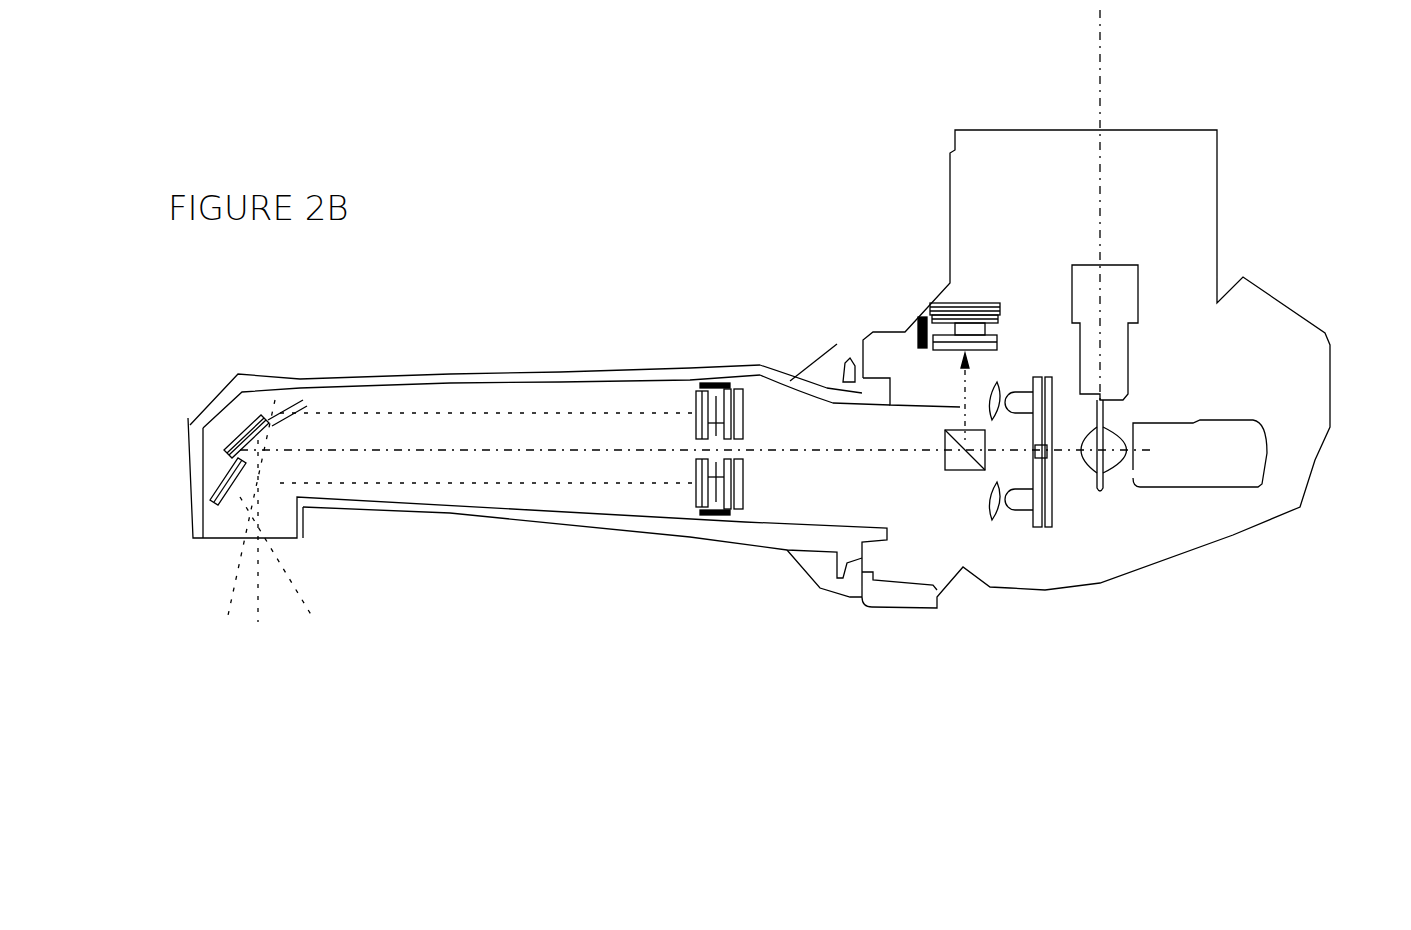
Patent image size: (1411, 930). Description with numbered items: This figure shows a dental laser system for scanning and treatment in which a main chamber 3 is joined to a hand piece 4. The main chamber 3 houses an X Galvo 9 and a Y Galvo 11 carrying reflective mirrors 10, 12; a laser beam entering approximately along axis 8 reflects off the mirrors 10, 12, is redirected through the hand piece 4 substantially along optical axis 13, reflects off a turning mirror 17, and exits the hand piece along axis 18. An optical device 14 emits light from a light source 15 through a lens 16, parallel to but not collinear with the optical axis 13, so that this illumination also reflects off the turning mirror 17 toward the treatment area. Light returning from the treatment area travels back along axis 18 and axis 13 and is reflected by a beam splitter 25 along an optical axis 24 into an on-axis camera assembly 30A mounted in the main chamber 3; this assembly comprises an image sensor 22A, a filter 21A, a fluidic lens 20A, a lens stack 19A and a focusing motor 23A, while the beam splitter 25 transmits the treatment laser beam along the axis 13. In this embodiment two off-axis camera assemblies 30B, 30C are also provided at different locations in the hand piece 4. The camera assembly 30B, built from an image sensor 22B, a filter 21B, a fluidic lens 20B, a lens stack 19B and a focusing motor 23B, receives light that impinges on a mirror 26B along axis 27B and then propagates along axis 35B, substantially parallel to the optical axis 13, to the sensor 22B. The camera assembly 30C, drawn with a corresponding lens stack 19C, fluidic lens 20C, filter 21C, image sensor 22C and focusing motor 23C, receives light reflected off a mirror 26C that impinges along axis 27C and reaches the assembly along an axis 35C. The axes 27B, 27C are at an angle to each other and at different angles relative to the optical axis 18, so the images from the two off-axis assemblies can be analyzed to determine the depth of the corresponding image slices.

The main chamber 3 is at (997, 128).
The hand piece 4 is at (522, 510).
The axis 8 is at (1100, 98).
The X Galvo 9 is at (1117, 280).
The reflective mirror 10 is at (1095, 495).
The Y Galvo 11 is at (1260, 457).
The reflective mirror 12 is at (1135, 468).
The optical axis 13 is at (390, 450).
The optical device 14 is at (1052, 490).
The light source 15 is at (1023, 512).
The lens 16 is at (998, 517).
The turning mirror 17 is at (203, 453).
The axis 18 is at (258, 578).
The lens stack 19A is at (996, 302).
The fluidic lens 20A is at (990, 302).
The filter 21A is at (978, 302).
The image sensor 22A is at (963, 302).
The focusing motor 23A is at (918, 320).
The lens stack 19B is at (690, 436).
The fluidic lens 20B is at (703, 415).
The filter 21B is at (728, 388).
The image sensor 22B is at (746, 392).
The focusing motor 23B is at (700, 380).
The lens 19C is at (698, 465).
The lens 20C is at (703, 482).
The lens 21C is at (728, 510).
The lens 22C is at (746, 512).
The aperture 23C is at (700, 514).
The optical axis 24 is at (828, 376).
The beam splitter 25 is at (950, 475).
The mirror 26B is at (330, 400).
The mirror 26C is at (207, 507).
The axis 27B is at (237, 594).
The axis 27C is at (300, 575).
The camera assembly 30A is at (818, 263).
The camera assembly 30B is at (750, 280).
The camera assembly 30C is at (767, 612).
The axis 35B is at (457, 452).
The light beam 35C is at (453, 480).